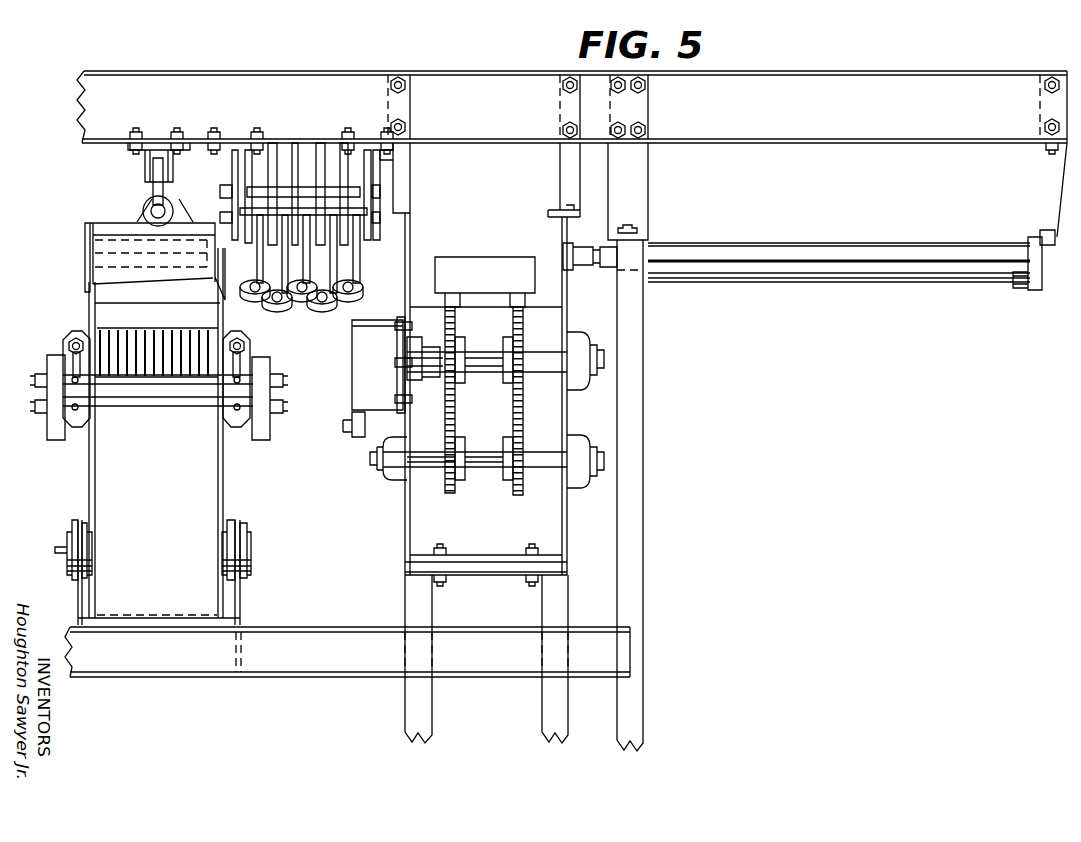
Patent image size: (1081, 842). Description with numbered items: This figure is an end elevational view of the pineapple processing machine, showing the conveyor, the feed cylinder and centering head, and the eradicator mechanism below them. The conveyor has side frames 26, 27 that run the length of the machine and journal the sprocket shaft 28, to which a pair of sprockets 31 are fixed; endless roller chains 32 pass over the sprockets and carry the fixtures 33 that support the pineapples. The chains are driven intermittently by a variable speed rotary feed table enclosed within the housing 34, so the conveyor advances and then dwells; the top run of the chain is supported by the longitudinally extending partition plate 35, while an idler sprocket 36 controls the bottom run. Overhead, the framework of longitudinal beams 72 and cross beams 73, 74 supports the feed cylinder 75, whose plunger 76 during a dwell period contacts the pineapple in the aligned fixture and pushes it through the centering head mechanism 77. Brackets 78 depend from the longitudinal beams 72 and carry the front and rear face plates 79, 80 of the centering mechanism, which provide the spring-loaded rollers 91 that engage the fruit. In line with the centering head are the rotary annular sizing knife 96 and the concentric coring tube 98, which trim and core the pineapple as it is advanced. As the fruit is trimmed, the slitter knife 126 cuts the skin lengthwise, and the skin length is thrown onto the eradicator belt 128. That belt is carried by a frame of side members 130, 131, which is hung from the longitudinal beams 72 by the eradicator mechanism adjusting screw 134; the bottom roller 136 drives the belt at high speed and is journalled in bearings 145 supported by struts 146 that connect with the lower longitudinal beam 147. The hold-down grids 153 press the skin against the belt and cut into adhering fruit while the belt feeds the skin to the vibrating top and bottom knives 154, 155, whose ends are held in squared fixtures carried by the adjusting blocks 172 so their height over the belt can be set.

The side frame 26 is at (412, 219).
The side frame 27 is at (562, 223).
The sprocket shaft 28 is at (487, 360).
The sprockets 31 is at (514, 330).
The endless roller chains 32 is at (545, 410).
The fixtures 33 is at (448, 270).
The housing 34 is at (370, 366).
The partition plate 35 is at (550, 305).
The idler sprocket 36 is at (514, 492).
The longitudinal beams 72 is at (118, 90).
The cross beam 73 is at (644, 234).
The cross beam 74 is at (1033, 238).
The feed cylinder 75 is at (845, 232).
The plunger 76 is at (572, 249).
The centering head mechanism 77 is at (392, 179).
The brackets 78 is at (228, 148).
The front face plate 79 is at (235, 165).
The rear face plate 80 is at (370, 143).
The rollers 91 is at (340, 275).
The annular sizing knife 96 is at (142, 233).
The coring tube 98 is at (177, 265).
The slitter knife 126 is at (112, 292).
The eradicator belt 128 is at (157, 592).
The side member 130 is at (92, 483).
The side member 131 is at (225, 492).
The eradicator mechanism adjusting screw 134 is at (148, 183).
The bottom roller 136 is at (92, 597).
The bearings 145 is at (247, 538).
The struts 146 is at (242, 598).
The longitudinal beam 147 is at (310, 663).
The hold-down grids 153 is at (120, 348).
The top vibrating knife 154 is at (128, 382).
The bottom vibrating knife 155 is at (180, 408).
The adjusting blocks 172 is at (283, 350).